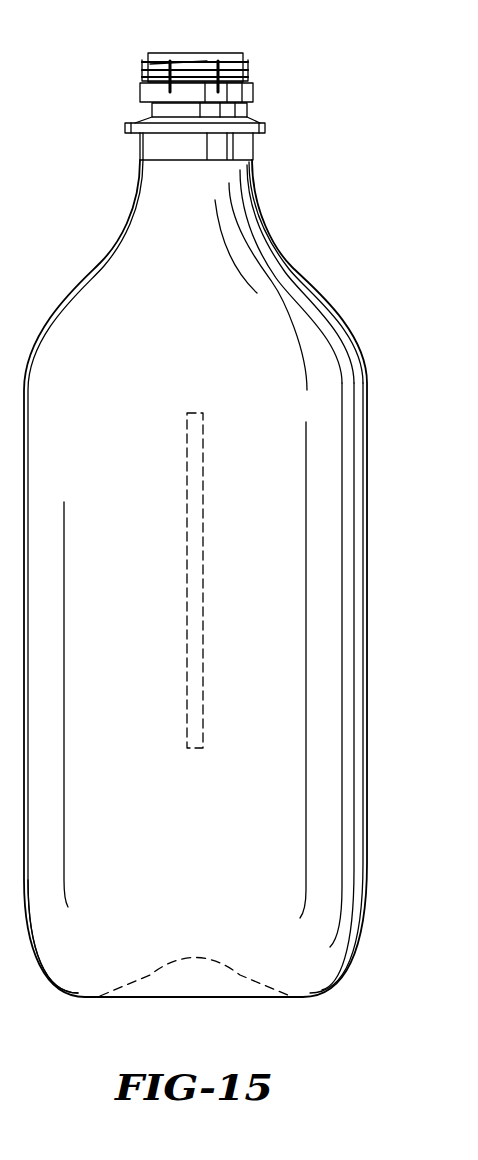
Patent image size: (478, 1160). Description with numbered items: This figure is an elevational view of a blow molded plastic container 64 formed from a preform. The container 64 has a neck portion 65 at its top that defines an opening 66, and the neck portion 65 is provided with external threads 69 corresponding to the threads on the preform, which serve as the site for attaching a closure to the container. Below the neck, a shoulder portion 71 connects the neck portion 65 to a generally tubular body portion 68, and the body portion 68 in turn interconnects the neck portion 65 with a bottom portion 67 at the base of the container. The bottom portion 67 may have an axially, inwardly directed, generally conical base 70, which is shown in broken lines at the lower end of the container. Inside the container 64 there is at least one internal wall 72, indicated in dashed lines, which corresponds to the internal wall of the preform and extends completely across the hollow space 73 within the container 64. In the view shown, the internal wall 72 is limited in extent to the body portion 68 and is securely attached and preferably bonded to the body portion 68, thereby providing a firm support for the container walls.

The blow molded plastic container 64 is at (372, 343).
The neck portion 65 is at (250, 70).
The opening 66 is at (186, 52).
The bottom portion 67 is at (93, 996).
The body portion 68 is at (367, 755).
The external threads 69 is at (145, 70).
The conical base 70 is at (205, 952).
The shoulder portion 71 is at (288, 250).
The internal wall 72 is at (195, 552).
The hollow space 73 is at (97, 566).